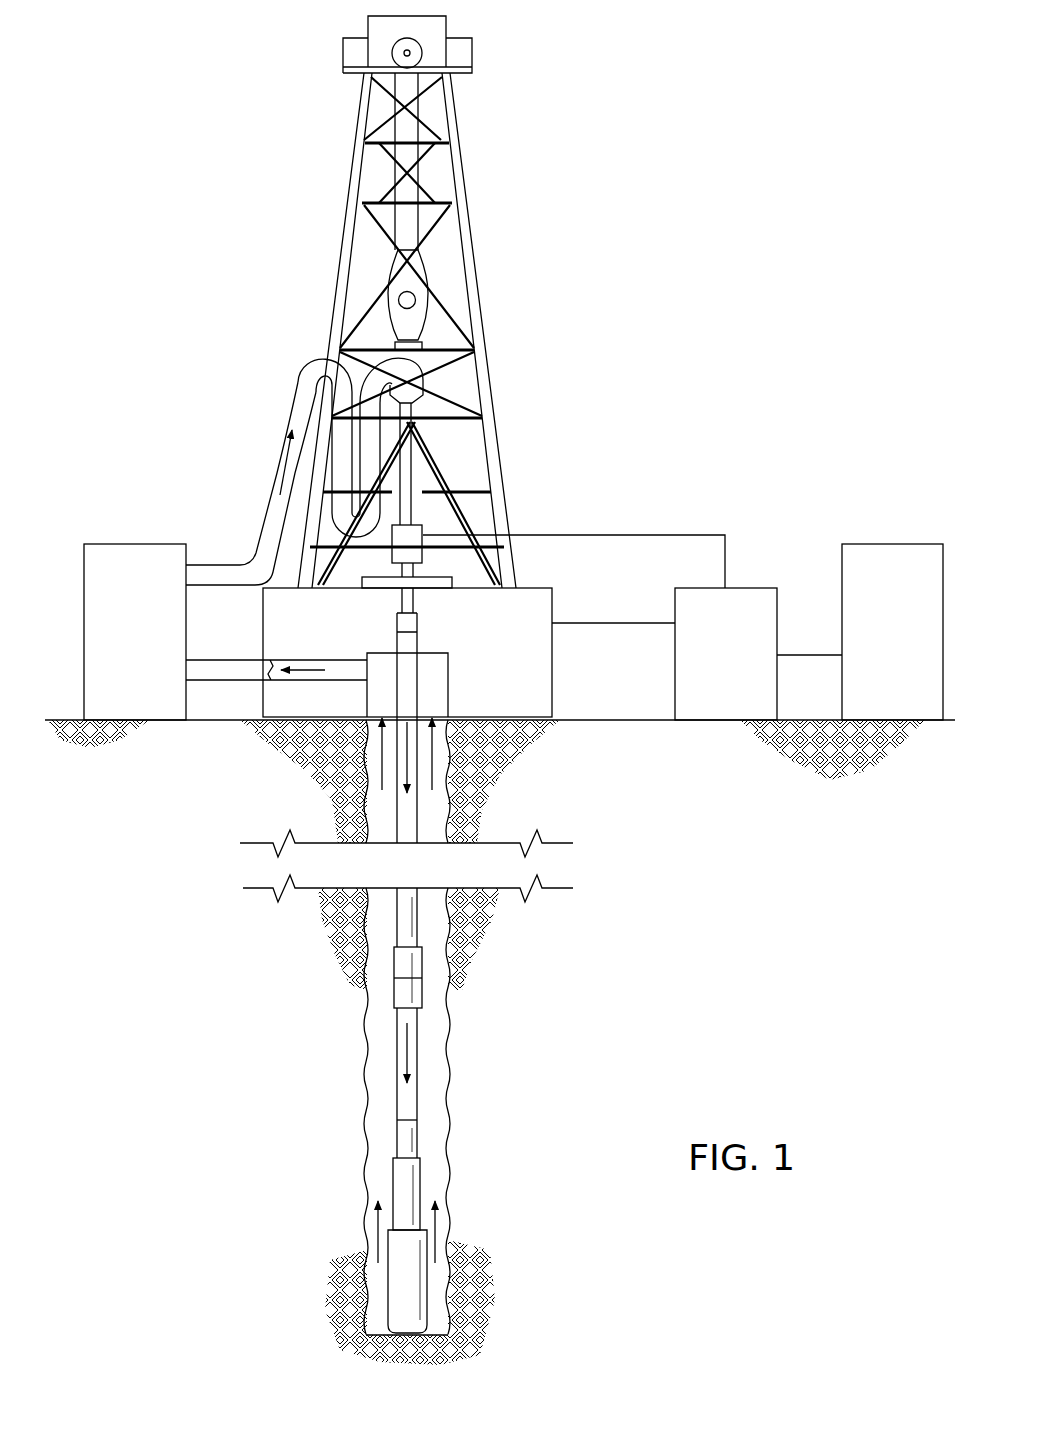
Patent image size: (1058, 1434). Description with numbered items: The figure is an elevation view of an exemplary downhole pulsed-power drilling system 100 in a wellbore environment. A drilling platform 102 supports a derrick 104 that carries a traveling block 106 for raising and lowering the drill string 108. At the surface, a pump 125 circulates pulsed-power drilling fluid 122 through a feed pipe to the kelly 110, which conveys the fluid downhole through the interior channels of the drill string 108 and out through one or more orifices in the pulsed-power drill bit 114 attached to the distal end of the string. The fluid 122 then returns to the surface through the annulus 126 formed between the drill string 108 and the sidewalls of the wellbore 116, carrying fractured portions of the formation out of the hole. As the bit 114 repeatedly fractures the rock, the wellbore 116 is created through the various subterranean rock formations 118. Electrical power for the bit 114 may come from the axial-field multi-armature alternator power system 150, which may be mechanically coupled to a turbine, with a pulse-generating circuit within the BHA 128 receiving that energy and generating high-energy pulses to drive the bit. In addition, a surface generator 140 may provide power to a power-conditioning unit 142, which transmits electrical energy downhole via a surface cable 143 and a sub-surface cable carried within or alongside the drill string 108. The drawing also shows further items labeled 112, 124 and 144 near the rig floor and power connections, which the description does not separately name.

The drilling system 100 is at (152, 238).
The drilling platform 102 is at (521, 682).
The derrick 104 is at (477, 333).
The traveling block 106 is at (424, 288).
The drill string 108 is at (408, 1105).
The kelly 110 is at (277, 450).
The rotary table 112 is at (362, 579).
The pulsed-power drill bit 114 is at (427, 1290).
The wellbore 116 is at (443, 1052).
The subterranean rock formations 118 is at (260, 982).
The pulsed-power drilling fluid 122 is at (306, 661).
The kelly 124 is at (423, 528).
The pump 125 is at (155, 647).
The annulus 126 is at (440, 1122).
The BHA 128 is at (403, 1178).
The generator 140 is at (913, 652).
The power-conditioning unit 142 is at (747, 675).
The surface cable 143 is at (600, 623).
The communication link 144 is at (605, 535).
The axial-field multi-armature alternator power system 150 is at (405, 1136).